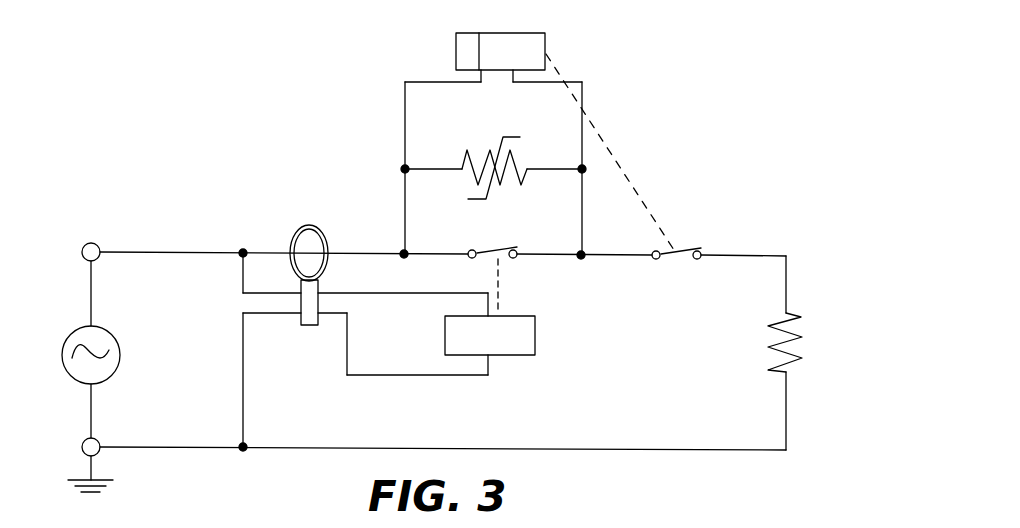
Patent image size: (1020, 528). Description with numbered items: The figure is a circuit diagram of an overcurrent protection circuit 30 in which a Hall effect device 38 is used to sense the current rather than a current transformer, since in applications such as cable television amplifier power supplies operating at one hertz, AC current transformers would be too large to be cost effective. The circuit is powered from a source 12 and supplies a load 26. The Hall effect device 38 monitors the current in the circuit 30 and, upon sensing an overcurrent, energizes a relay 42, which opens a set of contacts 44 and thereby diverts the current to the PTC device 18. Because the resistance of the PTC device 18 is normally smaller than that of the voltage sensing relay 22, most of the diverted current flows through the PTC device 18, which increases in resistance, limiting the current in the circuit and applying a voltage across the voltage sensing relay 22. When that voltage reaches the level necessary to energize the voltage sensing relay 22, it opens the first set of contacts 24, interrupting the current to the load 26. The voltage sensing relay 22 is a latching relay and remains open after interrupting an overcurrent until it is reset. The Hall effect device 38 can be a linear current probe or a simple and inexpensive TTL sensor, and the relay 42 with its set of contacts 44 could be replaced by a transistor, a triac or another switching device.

The AC power source 12 is at (60, 370).
The PTC device 18 is at (508, 182).
The voltage sensing relay 22 is at (500, 57).
The first set of contacts 24 is at (682, 263).
The load 26 is at (792, 352).
The overcurrent protection circuit 30 is at (686, 196).
The Hall effect device 38 is at (296, 320).
The relay 42 is at (490, 317).
The set of contacts 44 is at (493, 250).